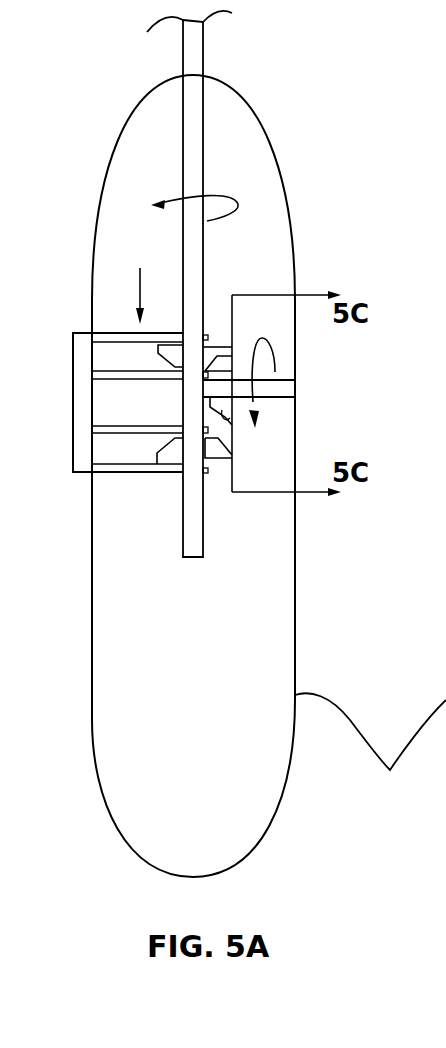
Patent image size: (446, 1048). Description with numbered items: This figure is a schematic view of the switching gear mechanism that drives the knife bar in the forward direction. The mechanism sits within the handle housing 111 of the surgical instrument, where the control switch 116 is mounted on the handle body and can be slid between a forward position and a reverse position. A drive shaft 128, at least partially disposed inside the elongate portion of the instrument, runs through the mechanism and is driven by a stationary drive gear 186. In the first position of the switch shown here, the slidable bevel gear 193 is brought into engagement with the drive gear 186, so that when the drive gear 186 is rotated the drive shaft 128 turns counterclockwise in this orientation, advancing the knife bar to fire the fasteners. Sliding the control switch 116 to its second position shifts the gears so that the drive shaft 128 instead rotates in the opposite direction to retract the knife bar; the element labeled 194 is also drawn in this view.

The handle housing 111 is at (370, 747).
The control switch 116 is at (72, 380).
The drive shaft 128 is at (188, 58).
The drive gear 186 is at (232, 428).
The slidable bevel gear 193 is at (207, 340).
The lower pawl 194 is at (213, 457).